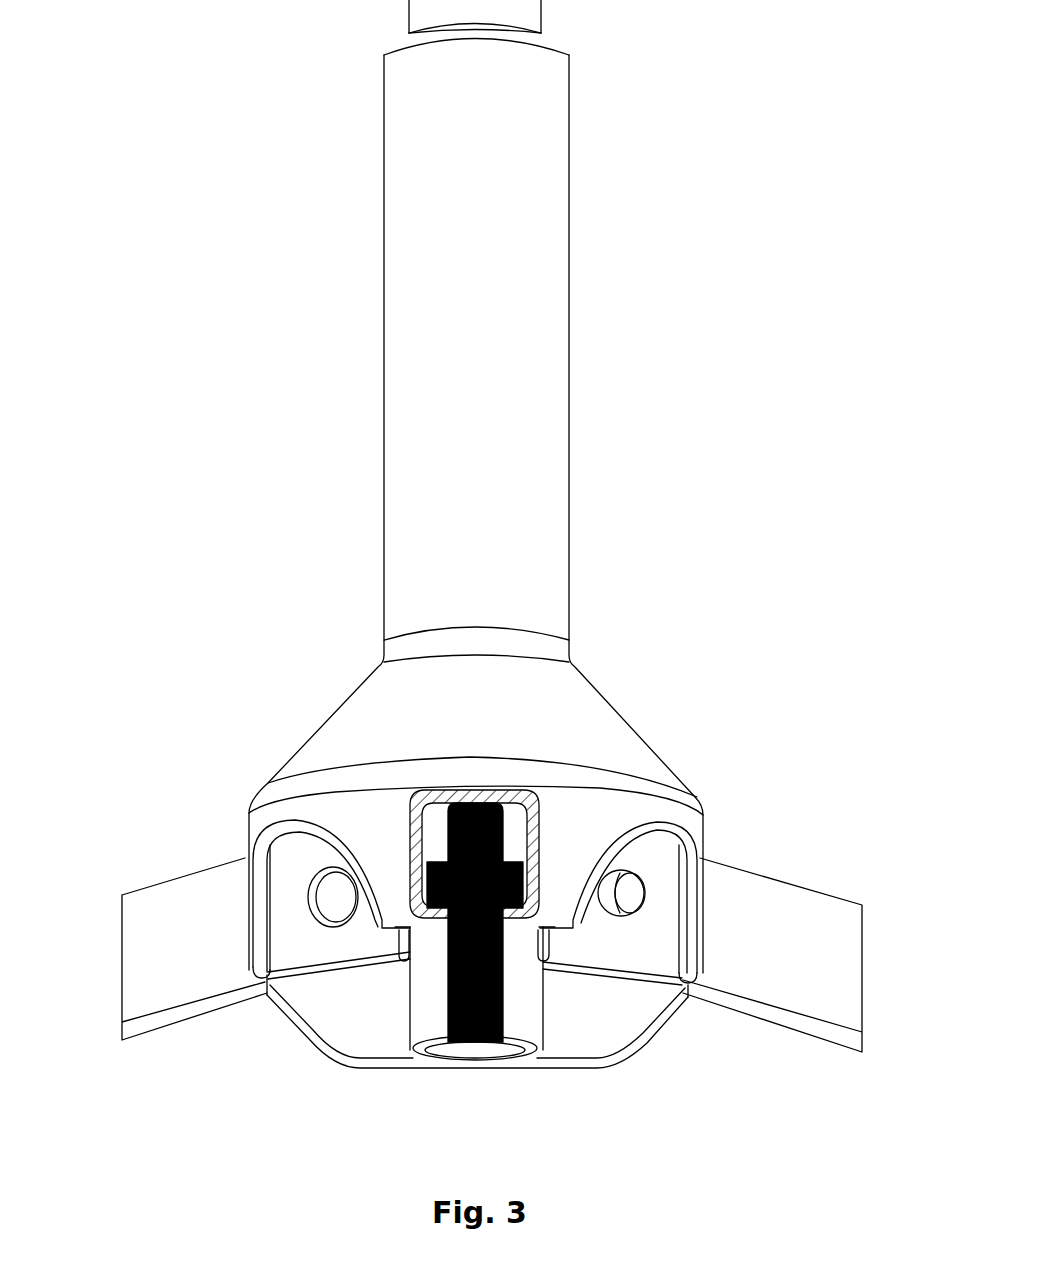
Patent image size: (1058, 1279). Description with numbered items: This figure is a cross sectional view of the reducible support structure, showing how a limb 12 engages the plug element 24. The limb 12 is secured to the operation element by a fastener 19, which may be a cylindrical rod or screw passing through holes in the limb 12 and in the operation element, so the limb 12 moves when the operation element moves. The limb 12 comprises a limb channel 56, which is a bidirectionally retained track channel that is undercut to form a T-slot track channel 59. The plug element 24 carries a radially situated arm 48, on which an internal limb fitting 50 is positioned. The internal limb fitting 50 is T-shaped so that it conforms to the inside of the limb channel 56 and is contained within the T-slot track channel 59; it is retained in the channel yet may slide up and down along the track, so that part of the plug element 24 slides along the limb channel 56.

The limb 12 is at (832, 935).
The fastener 19 is at (630, 893).
The plug element 24 is at (543, 1060).
The arm 48 is at (307, 993).
The internal limb fitting 50 is at (445, 912).
The limb channel 56 is at (530, 798).
The T-slot track channel 59 is at (430, 835).